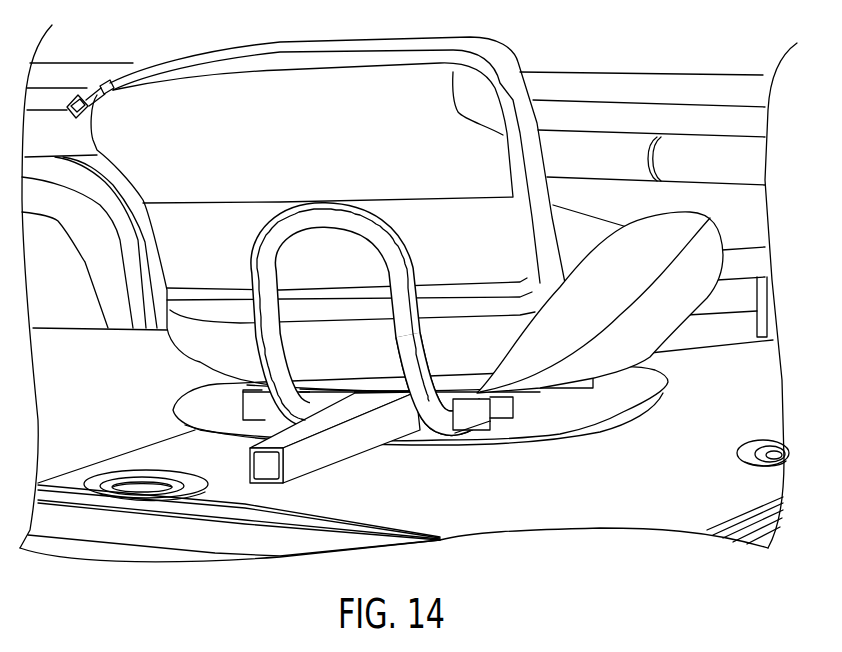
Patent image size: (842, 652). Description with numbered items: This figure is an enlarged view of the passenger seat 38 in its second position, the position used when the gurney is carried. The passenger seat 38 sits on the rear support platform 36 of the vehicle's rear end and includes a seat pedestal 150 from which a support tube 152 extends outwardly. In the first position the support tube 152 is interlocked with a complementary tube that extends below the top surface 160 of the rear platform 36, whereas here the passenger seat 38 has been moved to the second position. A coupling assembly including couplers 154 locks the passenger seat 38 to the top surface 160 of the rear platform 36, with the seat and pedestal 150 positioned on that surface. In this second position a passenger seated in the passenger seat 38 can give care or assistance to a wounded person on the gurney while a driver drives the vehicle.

The rear support platform 36 is at (679, 508).
The passenger seat 38 is at (521, 128).
The seat pedestal 150 is at (594, 403).
The support tube 152 is at (306, 457).
The couplers 154 is at (467, 408).
The top surface 160 is at (660, 457).